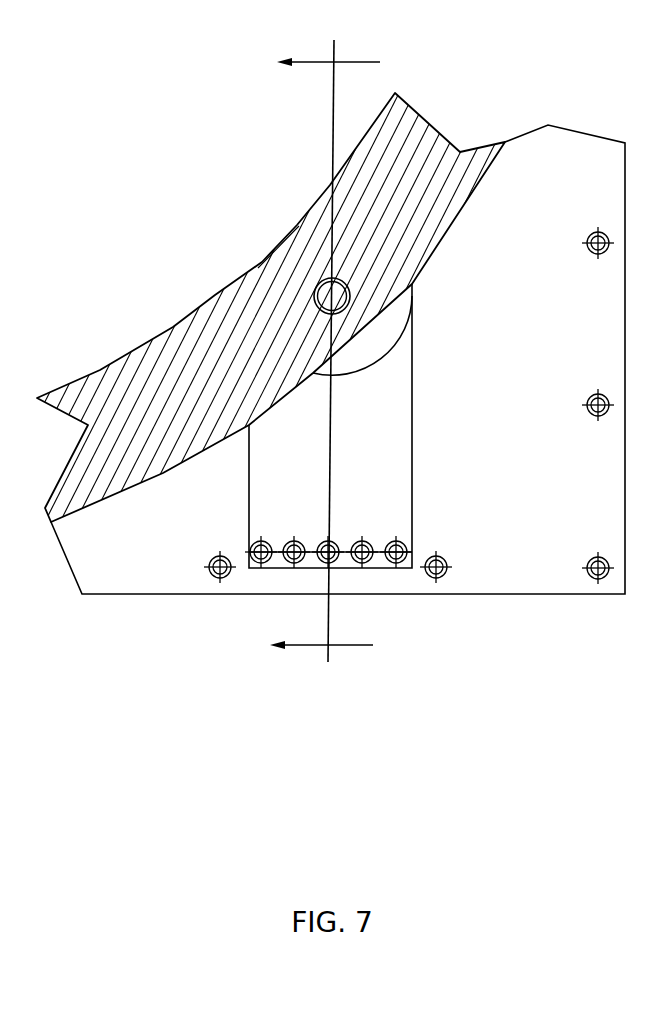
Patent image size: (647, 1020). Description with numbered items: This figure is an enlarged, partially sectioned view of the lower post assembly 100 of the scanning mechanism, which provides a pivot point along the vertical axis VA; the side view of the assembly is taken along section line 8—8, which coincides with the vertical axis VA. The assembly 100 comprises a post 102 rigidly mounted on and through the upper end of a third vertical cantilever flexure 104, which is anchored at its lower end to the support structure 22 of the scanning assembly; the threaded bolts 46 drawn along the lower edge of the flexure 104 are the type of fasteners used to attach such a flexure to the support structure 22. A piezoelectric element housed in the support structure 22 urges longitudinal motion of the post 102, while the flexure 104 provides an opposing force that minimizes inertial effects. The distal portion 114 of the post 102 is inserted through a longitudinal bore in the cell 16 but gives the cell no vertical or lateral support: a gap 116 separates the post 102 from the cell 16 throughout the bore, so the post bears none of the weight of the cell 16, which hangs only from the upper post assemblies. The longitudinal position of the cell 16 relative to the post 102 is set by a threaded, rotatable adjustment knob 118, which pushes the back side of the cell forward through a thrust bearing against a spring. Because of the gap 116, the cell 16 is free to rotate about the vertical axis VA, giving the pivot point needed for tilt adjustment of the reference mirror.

The section line 8— 8 is at (338, 356).
The vertical axis VA is at (334, 130).
The cell 16 is at (145, 470).
The support structure 22 is at (512, 577).
The threaded bolts 46 is at (252, 556).
The post assembly 100 is at (352, 427).
The post 102 is at (351, 293).
The vertical cantilever flexure 104 is at (386, 495).
The distal portion of the post 114 is at (347, 283).
The gap 116 is at (349, 309).
The adjustment knob 118 is at (357, 363).